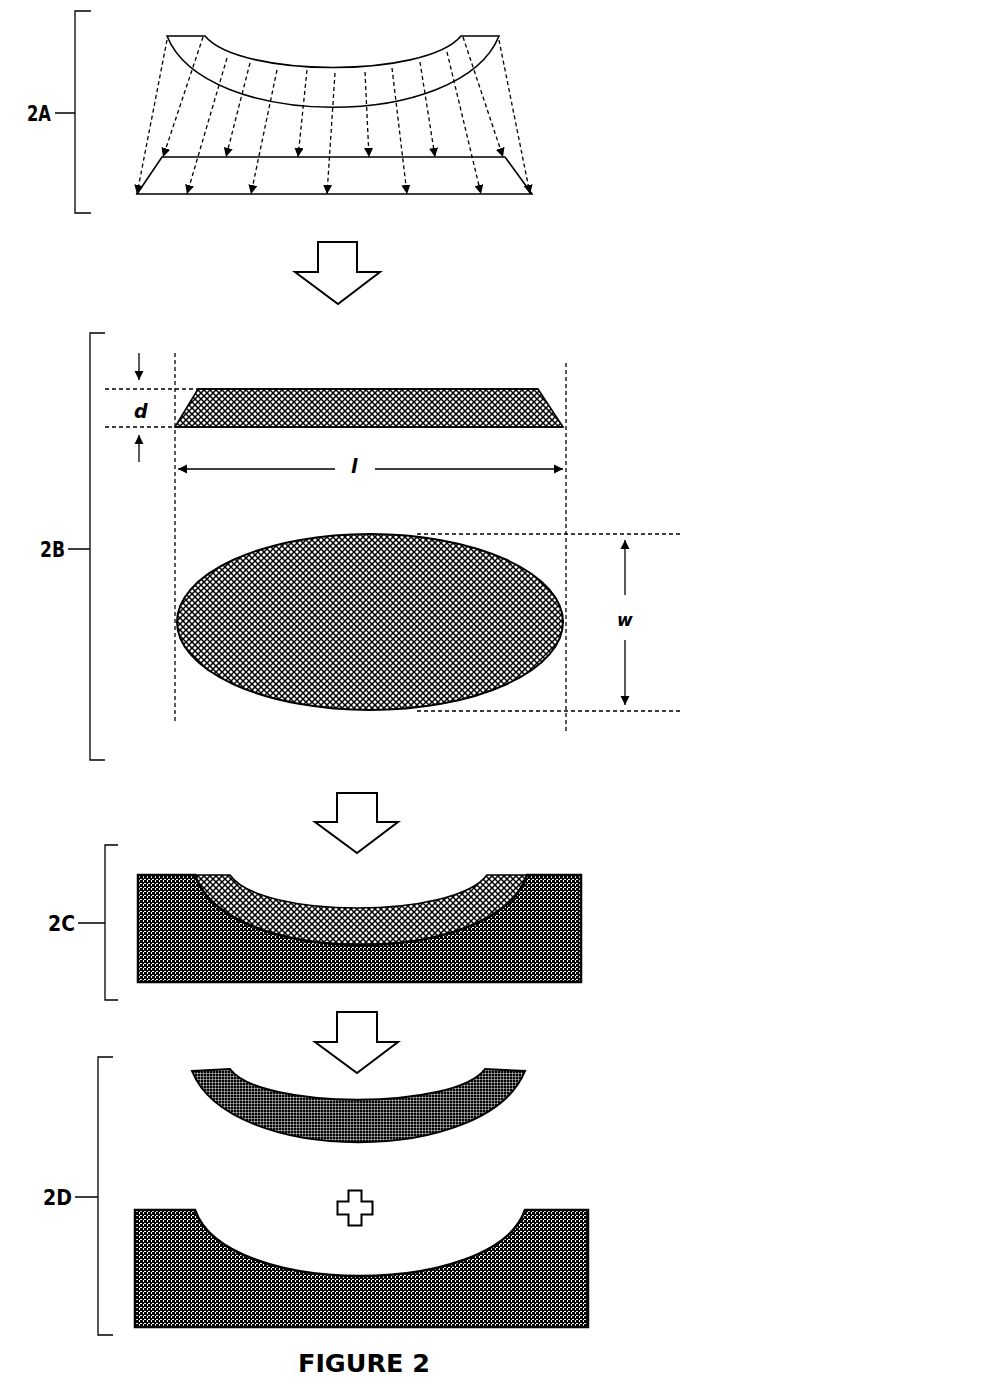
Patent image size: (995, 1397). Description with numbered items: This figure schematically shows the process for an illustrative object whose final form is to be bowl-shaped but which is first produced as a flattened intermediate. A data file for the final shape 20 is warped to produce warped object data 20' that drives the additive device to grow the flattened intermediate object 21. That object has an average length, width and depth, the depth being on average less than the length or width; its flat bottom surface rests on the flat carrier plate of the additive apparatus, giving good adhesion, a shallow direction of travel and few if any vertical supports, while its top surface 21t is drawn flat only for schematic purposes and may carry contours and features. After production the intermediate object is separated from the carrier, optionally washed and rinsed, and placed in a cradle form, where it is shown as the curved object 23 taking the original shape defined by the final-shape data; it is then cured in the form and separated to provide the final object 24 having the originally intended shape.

The data file for the final shape 20 is at (416, 55).
The warped object data 20' is at (417, 115).
The flattened intermediate object 21 is at (357, 408).
The top surface 21t is at (310, 389).
The intermediate object in cradle 23 is at (361, 910).
The final object 24 is at (463, 1108).